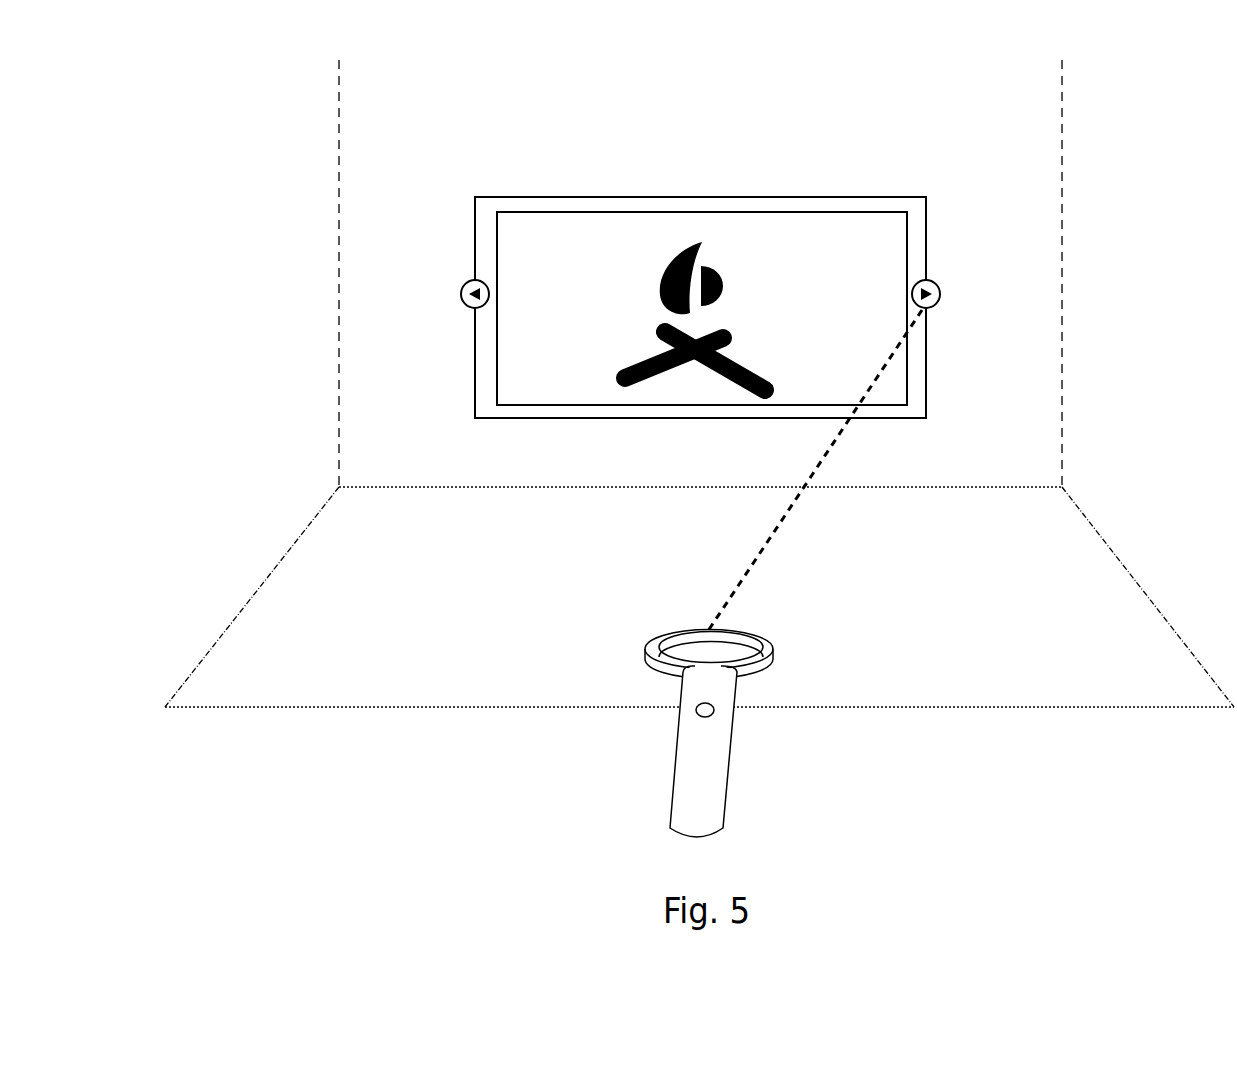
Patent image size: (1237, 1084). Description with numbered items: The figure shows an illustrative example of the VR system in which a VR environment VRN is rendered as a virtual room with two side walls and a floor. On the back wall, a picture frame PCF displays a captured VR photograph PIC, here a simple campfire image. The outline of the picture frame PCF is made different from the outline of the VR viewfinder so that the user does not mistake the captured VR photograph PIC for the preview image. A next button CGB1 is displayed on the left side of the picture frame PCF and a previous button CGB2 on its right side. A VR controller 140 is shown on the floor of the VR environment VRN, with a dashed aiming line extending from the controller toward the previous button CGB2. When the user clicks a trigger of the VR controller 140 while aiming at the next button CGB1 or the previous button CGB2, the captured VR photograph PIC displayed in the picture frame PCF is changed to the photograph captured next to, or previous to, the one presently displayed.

The VR controller 140 is at (676, 786).
The VR environment VRN is at (258, 151).
The picture frame PCF is at (475, 408).
The captured VR photograph PIC is at (533, 370).
The next button CGB1 is at (461, 293).
The previous button CGB2 is at (940, 294).